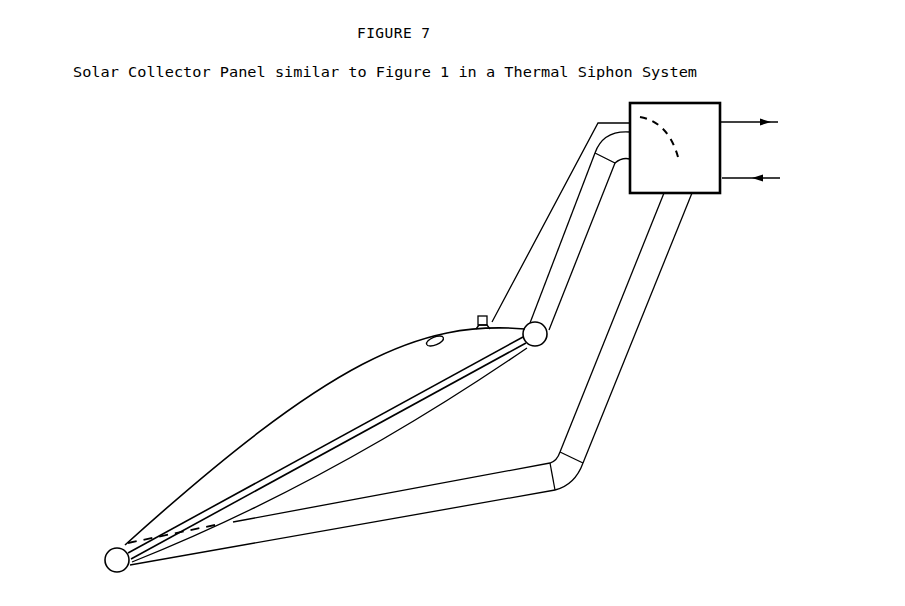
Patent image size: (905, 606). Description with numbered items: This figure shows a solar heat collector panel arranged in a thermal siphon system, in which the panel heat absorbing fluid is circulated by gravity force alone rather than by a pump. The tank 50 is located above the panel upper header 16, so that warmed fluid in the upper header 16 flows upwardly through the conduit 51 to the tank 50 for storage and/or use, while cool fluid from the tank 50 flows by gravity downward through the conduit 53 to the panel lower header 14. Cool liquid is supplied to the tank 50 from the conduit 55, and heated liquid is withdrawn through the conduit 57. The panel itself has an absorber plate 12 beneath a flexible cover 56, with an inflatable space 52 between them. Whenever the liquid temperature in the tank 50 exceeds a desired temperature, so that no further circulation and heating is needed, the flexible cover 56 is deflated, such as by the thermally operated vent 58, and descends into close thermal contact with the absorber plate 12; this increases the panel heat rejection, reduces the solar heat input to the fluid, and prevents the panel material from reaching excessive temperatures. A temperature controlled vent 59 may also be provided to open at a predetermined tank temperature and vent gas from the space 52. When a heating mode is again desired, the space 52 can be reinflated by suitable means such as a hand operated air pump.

The absorber plate 12 is at (402, 410).
The panel lower header 14 is at (102, 550).
The panel upper header 16 is at (643, 333).
The tank 50 is at (697, 198).
The conduit 51 is at (566, 210).
The space 52 is at (238, 465).
The conduit 53 is at (462, 513).
The conduit 55 is at (781, 196).
The flexible cover 56 is at (290, 403).
The conduit 57 is at (780, 103).
The thermally operated vent 58 is at (418, 337).
The temperature controlled vent 59 is at (483, 312).